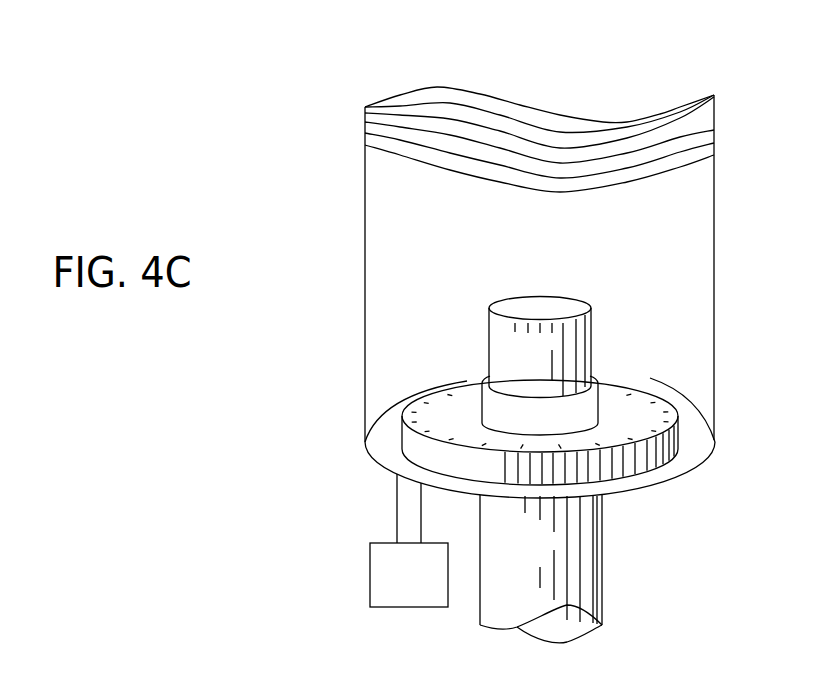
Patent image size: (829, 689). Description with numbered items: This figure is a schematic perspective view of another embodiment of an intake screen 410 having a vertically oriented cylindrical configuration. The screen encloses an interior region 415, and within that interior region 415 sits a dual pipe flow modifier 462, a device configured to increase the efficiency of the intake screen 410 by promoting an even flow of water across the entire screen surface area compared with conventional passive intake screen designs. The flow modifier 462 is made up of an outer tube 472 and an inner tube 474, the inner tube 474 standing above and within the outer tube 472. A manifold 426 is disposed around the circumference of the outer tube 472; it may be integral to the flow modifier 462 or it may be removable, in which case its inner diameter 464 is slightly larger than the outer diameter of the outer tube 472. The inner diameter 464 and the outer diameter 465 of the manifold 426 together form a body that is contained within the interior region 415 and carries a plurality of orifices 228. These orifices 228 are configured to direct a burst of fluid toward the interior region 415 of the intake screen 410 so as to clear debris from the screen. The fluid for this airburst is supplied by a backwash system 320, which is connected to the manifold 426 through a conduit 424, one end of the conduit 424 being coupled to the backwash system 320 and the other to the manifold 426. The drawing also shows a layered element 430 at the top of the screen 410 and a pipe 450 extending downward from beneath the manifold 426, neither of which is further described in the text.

The intake screen 410 is at (588, 60).
The interior region 415 is at (572, 242).
The layered material 430 is at (714, 131).
The inner tube 474 is at (493, 303).
The dual pipe flow modifier 462 is at (636, 365).
The inner diameter 464 is at (428, 393).
The outer tube 472 is at (640, 391).
The orifices 228 is at (678, 414).
The manifold 426 is at (678, 433).
The outer diameter 465 is at (412, 443).
The shaft 450 is at (602, 572).
The conduit 424 is at (397, 510).
The backwash system 320 is at (390, 586).